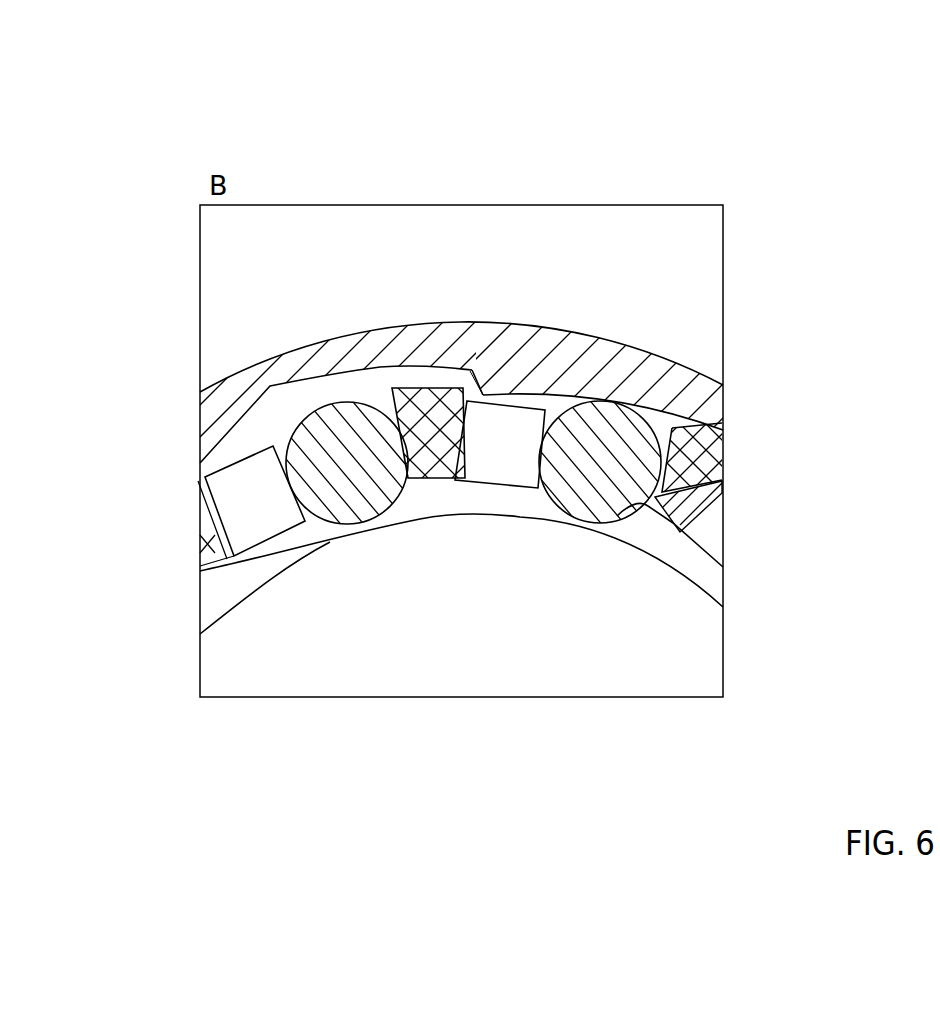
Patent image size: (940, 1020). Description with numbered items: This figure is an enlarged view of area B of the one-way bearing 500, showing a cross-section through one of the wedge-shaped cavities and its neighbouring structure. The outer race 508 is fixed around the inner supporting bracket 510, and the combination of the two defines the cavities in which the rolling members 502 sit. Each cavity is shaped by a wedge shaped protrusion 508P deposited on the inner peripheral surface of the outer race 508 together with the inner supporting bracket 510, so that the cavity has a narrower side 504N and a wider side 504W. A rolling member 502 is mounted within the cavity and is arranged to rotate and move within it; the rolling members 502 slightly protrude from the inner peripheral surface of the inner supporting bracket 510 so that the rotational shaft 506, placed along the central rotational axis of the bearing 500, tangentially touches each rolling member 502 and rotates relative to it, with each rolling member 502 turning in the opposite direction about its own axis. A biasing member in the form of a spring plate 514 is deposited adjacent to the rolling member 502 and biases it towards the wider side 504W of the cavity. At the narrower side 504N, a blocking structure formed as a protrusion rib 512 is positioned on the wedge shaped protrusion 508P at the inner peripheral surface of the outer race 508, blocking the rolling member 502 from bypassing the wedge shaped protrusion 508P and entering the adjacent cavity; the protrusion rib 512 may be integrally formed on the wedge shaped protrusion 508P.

The one-way bearing 500 is at (793, 140).
The rolling member 502 is at (297, 402).
The wider side 504W is at (402, 505).
The narrower side 504N is at (525, 503).
The rotational shaft 506 is at (460, 580).
The outer race 508 is at (323, 352).
The wedge shaped protrusion 508P is at (550, 363).
The inner supporting bracket 510 is at (430, 405).
The protrusion rib 512 is at (490, 392).
The spring plate 514 is at (255, 517).